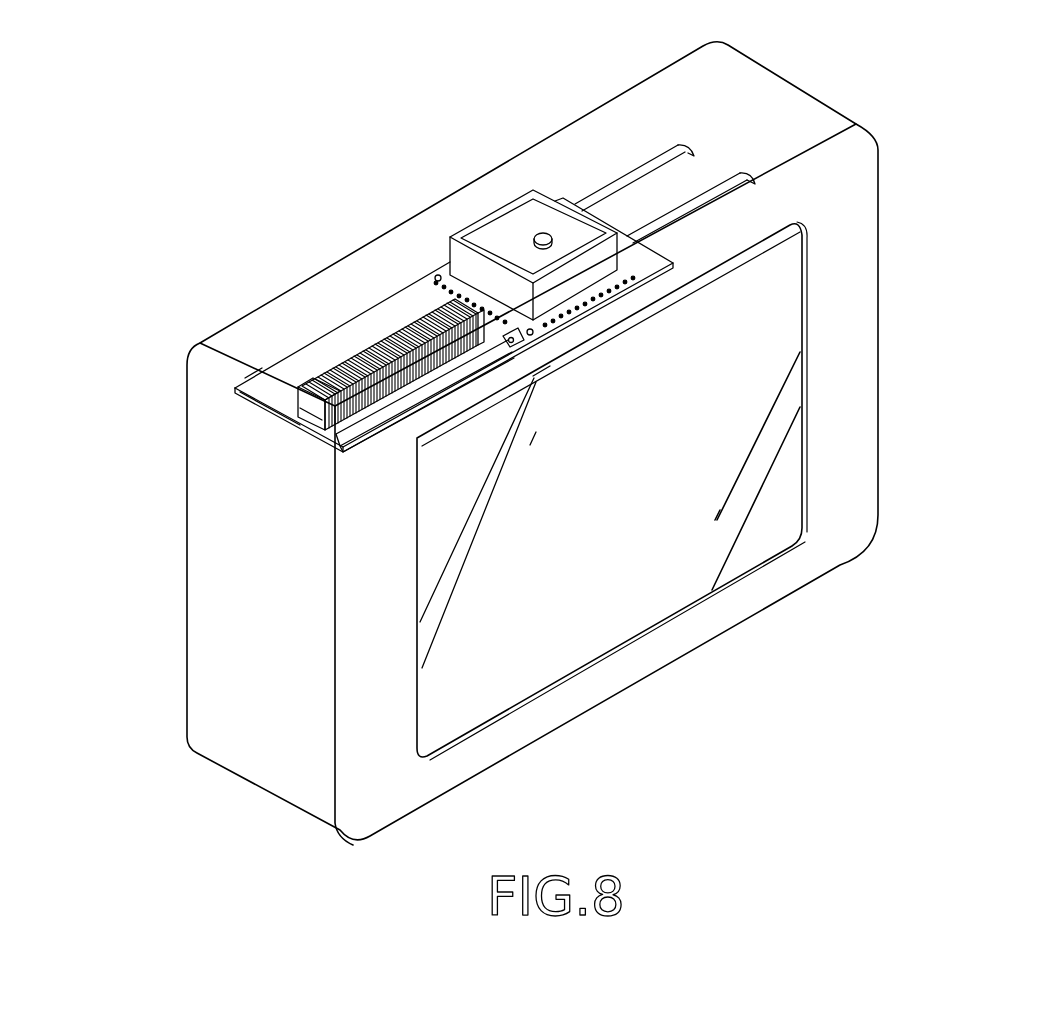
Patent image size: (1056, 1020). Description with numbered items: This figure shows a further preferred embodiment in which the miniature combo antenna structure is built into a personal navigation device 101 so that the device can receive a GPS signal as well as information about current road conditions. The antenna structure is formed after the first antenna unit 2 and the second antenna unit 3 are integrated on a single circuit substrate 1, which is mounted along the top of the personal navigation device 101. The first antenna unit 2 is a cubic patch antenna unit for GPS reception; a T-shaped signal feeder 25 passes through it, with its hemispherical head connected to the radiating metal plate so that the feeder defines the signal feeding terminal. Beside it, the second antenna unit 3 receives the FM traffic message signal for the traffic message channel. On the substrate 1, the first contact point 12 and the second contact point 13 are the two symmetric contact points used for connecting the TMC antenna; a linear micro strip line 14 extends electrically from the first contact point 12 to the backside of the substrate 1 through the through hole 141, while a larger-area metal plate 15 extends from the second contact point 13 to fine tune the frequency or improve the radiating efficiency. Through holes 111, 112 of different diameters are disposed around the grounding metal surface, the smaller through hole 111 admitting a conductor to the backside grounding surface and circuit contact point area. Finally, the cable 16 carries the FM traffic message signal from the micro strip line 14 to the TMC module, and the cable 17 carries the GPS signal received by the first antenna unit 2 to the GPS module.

The circuit substrate 1 is at (662, 258).
The first antenna unit 2 is at (478, 213).
The second antenna unit 3 is at (362, 345).
The first contact point 12 is at (312, 423).
The second contact point 13 is at (533, 372).
The micro strip line 14 is at (387, 418).
The metal plate 15 is at (303, 362).
The cable 16 is at (637, 173).
The cable 17 is at (703, 197).
The signal feeder 25 is at (537, 237).
The personal navigation device 101 is at (853, 327).
The through hole 111 is at (633, 288).
The through hole 112 is at (440, 268).
The through hole 141 is at (508, 340).